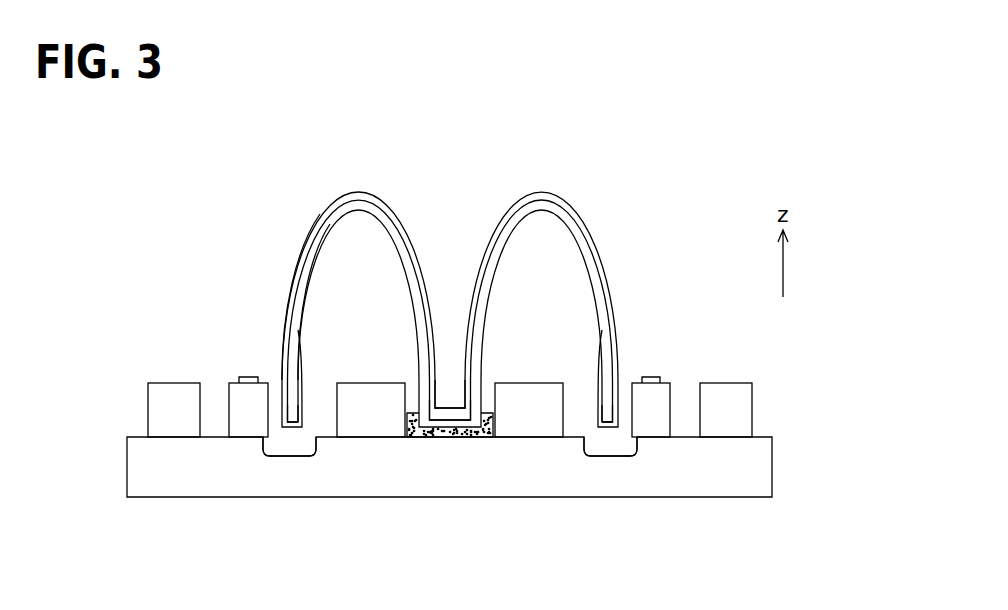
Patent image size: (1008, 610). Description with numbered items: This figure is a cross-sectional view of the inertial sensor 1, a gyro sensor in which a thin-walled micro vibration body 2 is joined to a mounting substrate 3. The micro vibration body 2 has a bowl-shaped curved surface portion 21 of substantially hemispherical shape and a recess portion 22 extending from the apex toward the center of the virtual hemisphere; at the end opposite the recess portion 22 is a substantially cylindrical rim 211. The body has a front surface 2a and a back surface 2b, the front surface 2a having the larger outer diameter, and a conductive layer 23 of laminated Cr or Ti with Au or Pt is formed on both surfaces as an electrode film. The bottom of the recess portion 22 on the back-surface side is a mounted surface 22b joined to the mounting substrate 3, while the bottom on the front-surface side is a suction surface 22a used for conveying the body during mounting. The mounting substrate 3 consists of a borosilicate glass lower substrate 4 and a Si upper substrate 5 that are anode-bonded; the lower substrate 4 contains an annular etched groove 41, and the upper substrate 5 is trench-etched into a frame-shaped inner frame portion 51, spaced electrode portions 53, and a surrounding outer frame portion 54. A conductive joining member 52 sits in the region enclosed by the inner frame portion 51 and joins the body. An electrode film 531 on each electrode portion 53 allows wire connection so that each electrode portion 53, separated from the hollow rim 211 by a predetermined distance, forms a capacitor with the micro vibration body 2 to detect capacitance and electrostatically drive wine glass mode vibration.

The inertial sensor 1 is at (177, 228).
The micro vibration body 2 is at (445, 351).
The front surface 2a is at (298, 272).
The back surface 2b is at (313, 287).
The curved surface portion 21 is at (598, 256).
The rim 211 is at (292, 414).
The recess portion 22 is at (488, 258).
The suction surface 22a is at (452, 410).
The mounted surface 22b is at (450, 416).
The conductive layer 23 is at (302, 255).
The mounting substrate 3 is at (457, 438).
The lower substrate 4 is at (785, 437).
The etched groove 41 is at (280, 457).
The upper substrate 5 is at (483, 438).
The inner frame portion 51 is at (373, 395).
The joining member 52 is at (412, 415).
The electrode portion 53 is at (240, 405).
The electrode film 531 is at (248, 376).
The outer frame portion 54 is at (165, 395).